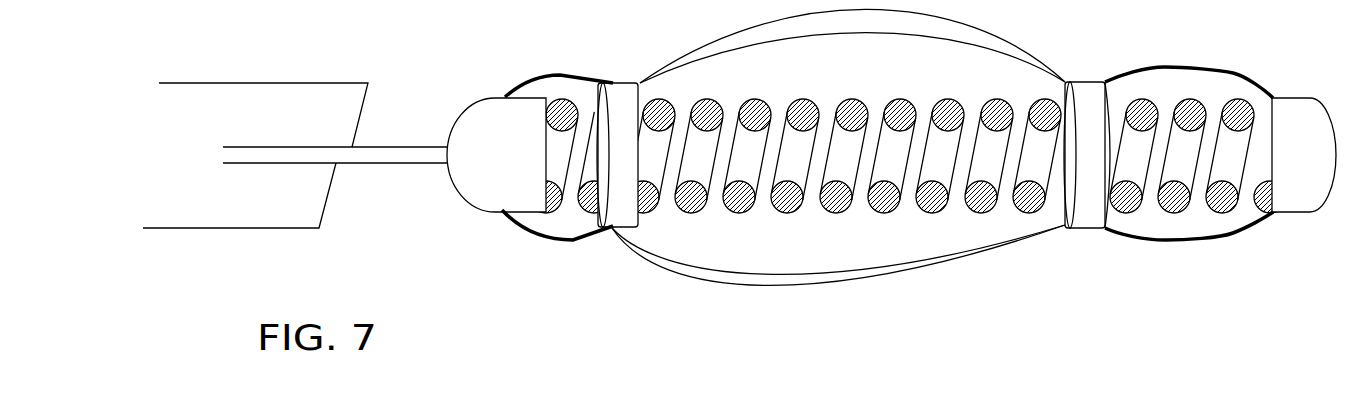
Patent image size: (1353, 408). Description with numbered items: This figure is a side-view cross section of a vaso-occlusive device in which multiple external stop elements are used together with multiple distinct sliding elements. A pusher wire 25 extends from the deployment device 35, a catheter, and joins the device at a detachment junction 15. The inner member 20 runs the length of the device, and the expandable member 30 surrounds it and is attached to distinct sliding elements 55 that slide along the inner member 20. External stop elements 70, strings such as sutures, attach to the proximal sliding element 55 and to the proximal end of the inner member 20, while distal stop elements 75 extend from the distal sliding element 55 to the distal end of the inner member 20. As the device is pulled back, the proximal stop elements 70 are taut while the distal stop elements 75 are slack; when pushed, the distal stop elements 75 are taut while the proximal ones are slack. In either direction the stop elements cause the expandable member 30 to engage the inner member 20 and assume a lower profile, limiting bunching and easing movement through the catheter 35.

The detachment junction 15 is at (446, 165).
The inner member 20 is at (803, 100).
The pusher wire 25 is at (385, 147).
The expandable member 30 is at (740, 50).
The deployment device (catheter) 35 is at (240, 212).
The distinct sliding elements 55 is at (620, 83).
The external stop elements 70 is at (545, 80).
The distal stop elements 75 is at (1175, 65).